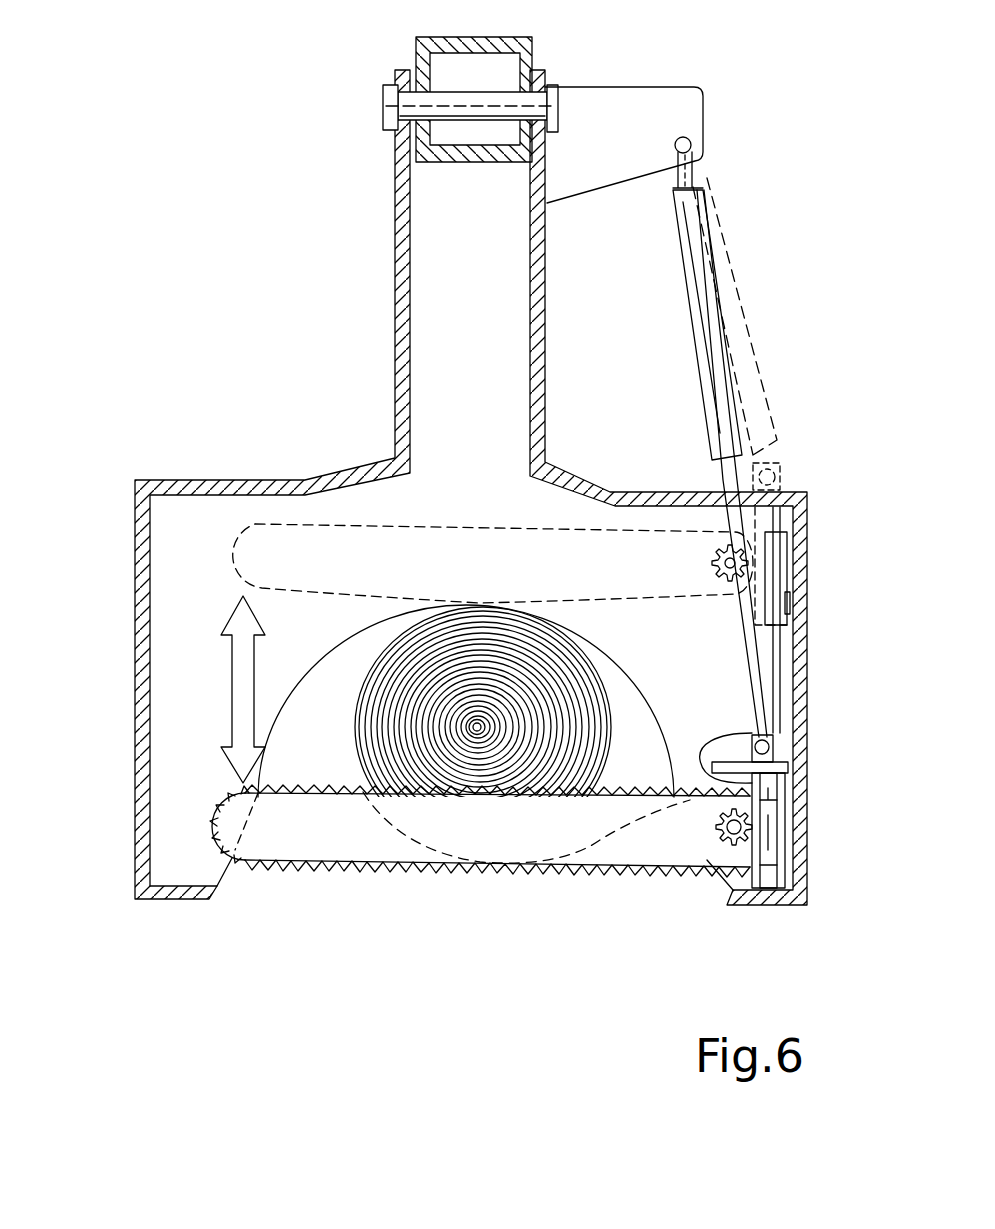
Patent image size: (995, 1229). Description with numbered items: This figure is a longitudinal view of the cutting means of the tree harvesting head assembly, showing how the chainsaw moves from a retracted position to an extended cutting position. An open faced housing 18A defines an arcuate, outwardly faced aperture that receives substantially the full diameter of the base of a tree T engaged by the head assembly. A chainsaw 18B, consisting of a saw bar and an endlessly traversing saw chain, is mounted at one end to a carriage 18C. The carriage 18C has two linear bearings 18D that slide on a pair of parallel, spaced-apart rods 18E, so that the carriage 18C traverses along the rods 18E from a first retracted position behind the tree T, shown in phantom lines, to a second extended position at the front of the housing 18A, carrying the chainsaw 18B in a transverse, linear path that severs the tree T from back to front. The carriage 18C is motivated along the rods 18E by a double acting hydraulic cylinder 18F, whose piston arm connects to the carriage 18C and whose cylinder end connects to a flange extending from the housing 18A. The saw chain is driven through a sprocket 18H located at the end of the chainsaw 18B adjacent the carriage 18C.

The open faced housing 18A is at (135, 818).
The chainsaw 18B is at (510, 883).
The carriage 18C is at (775, 735).
The linear bearings 18D is at (775, 877).
The rods 18E is at (777, 640).
The double acting hydraulic cylinder 18F is at (693, 325).
The sprocket 18H is at (705, 830).
The tree T is at (365, 737).